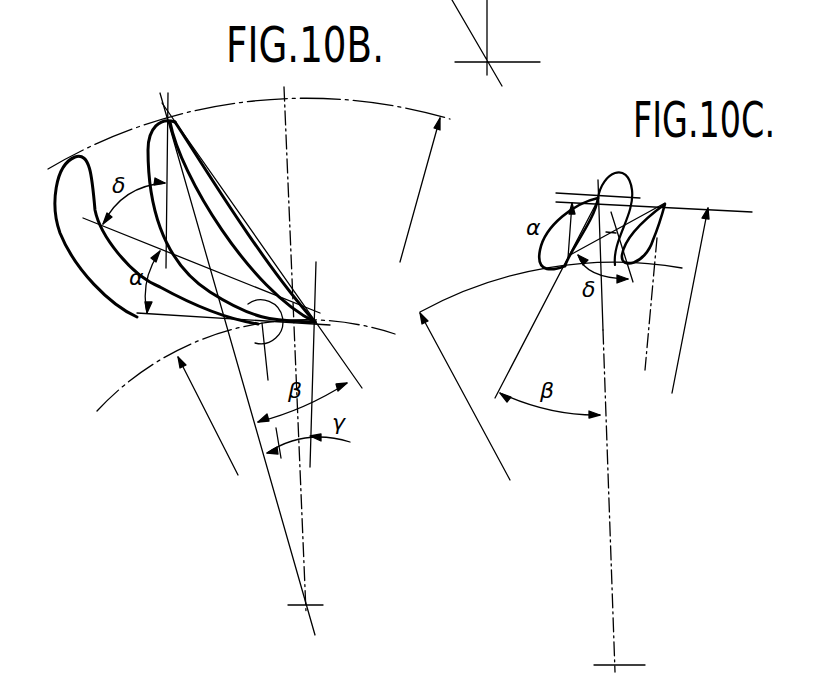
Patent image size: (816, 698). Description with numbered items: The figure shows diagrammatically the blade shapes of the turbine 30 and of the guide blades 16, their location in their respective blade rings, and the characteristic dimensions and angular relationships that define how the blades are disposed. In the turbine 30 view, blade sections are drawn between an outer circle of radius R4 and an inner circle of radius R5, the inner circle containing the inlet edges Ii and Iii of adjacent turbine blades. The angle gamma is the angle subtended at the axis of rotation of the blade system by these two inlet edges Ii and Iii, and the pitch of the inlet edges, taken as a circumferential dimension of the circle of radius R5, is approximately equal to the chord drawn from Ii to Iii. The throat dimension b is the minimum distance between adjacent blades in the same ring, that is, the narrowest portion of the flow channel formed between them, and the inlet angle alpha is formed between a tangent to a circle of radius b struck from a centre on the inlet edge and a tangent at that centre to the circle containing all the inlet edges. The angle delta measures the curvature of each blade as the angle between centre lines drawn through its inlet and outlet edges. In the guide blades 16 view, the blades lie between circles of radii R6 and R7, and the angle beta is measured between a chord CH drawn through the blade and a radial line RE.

In FIG. 10B, the turbine 30 is at (182, 182).
In FIG. 10C, the guide blades 16 is at (682, 220).
In FIG. 10B, the chord CH is at (258, 240).
In FIG. 10C, the chord CH is at (582, 215).
In FIG. 10C, the radial line RE is at (605, 400).
In FIG. 10B, the radius R4 is at (410, 231).
In FIG. 10B, the radius R5 is at (208, 416).
In FIG. 10C, the radius R6 is at (465, 396).
In FIG. 10C, the radius R7 is at (690, 300).
In FIG. 10B, the minimum distance between adjacent blades b is at (304, 334).
In FIG. 10C, the minimum distance between adjacent blades b is at (605, 192).
In FIG. 10B, the inlet edge Ii is at (318, 325).
In FIG. 10B, the inlet edge Iii is at (226, 340).